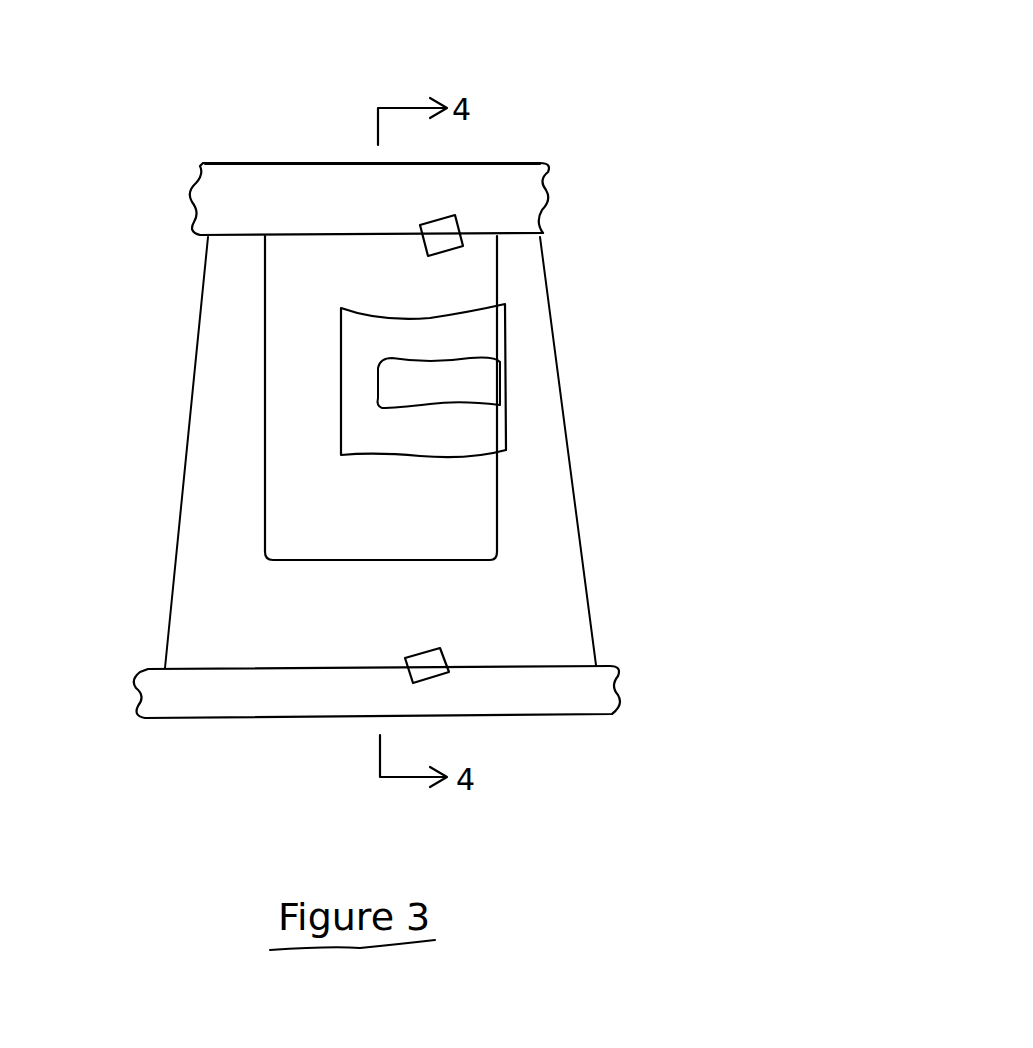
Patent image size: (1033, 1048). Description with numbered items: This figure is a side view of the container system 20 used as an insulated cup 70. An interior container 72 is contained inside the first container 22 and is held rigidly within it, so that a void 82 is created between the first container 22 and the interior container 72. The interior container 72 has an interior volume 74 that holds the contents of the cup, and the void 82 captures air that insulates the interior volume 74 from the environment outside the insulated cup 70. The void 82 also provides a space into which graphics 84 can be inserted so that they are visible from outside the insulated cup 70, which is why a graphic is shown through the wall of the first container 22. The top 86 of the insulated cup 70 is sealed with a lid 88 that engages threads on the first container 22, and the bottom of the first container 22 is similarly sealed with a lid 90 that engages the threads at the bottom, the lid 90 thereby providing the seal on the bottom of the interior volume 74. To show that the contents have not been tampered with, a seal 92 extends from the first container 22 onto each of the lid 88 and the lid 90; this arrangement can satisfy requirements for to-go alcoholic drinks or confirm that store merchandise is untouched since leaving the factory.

The container system 20 is at (144, 72).
The insulated cup 70 is at (697, 150).
The top 86 is at (555, 206).
The lid 88 is at (510, 158).
The lid 90 is at (586, 694).
The first container 22 is at (562, 391).
The interior container 72 is at (497, 533).
The interior volume 74 is at (425, 521).
The graphics 84 is at (496, 376).
The seal 92 is at (457, 240).
The void 82 is at (456, 612).